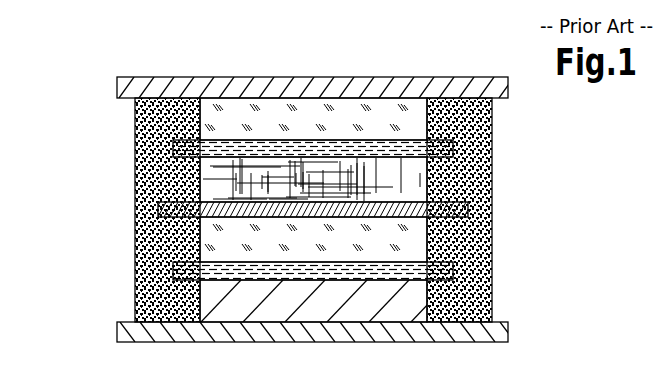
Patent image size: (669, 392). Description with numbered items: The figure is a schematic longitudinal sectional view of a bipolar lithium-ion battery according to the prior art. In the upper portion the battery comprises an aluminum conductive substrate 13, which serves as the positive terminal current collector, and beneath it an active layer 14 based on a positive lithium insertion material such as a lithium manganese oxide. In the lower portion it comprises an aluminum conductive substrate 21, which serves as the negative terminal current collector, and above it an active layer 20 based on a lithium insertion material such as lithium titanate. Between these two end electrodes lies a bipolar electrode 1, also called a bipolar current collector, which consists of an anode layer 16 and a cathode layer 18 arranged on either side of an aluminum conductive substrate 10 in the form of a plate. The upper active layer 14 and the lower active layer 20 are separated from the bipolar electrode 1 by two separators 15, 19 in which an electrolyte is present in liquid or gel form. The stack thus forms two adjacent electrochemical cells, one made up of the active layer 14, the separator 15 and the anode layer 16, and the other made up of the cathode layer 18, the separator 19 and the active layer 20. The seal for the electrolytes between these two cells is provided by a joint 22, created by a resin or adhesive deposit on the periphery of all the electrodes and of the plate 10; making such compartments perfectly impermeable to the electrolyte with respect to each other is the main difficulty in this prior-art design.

The bipolar electrode 1 is at (299, 209).
The aluminum conductive substrate 10 is at (470, 205).
The aluminum conductive substrate 13 is at (127, 89).
The active layer 14 is at (210, 113).
The separator 15 is at (180, 145).
The anode layer 16 is at (212, 179).
The cathode layer 18 is at (210, 235).
The separator 19 is at (182, 268).
The active layer 20 is at (222, 302).
The aluminum conductive substrate 21 is at (118, 331).
The joint 22 is at (492, 232).